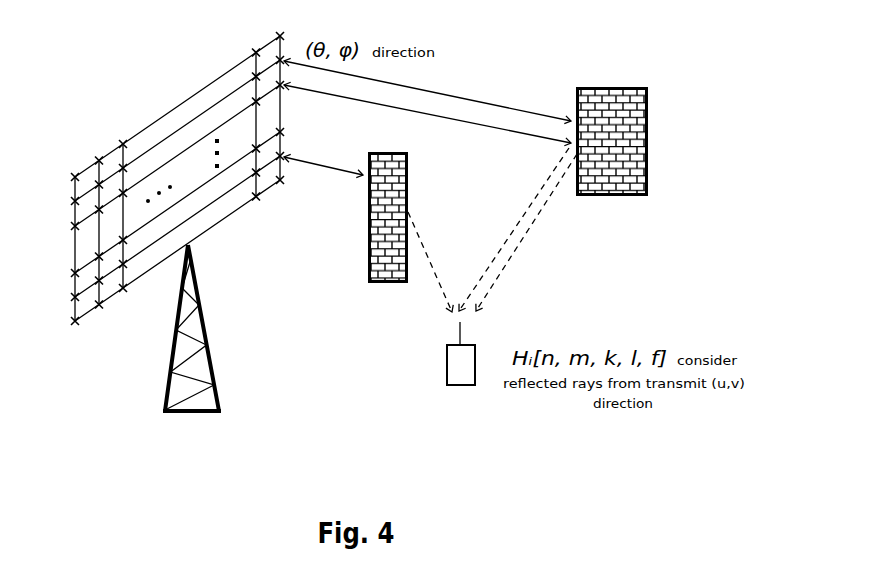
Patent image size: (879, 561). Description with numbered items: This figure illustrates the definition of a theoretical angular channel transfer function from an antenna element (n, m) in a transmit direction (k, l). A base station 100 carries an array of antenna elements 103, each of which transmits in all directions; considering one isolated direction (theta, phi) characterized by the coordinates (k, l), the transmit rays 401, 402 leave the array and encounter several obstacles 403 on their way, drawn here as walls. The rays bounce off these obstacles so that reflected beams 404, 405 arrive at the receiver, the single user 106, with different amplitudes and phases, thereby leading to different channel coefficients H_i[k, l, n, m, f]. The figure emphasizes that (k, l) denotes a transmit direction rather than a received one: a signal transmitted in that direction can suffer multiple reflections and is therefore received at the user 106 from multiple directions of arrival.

The base station 100 is at (191, 360).
The antenna element 103 is at (161, 178).
The user 106 is at (461, 390).
The transmit ray 401 is at (427, 102).
The transmit ray 402 is at (323, 159).
The obstacle 403 is at (612, 132).
The reflected beam 404 is at (535, 229).
The reflected beam 405 is at (434, 262).